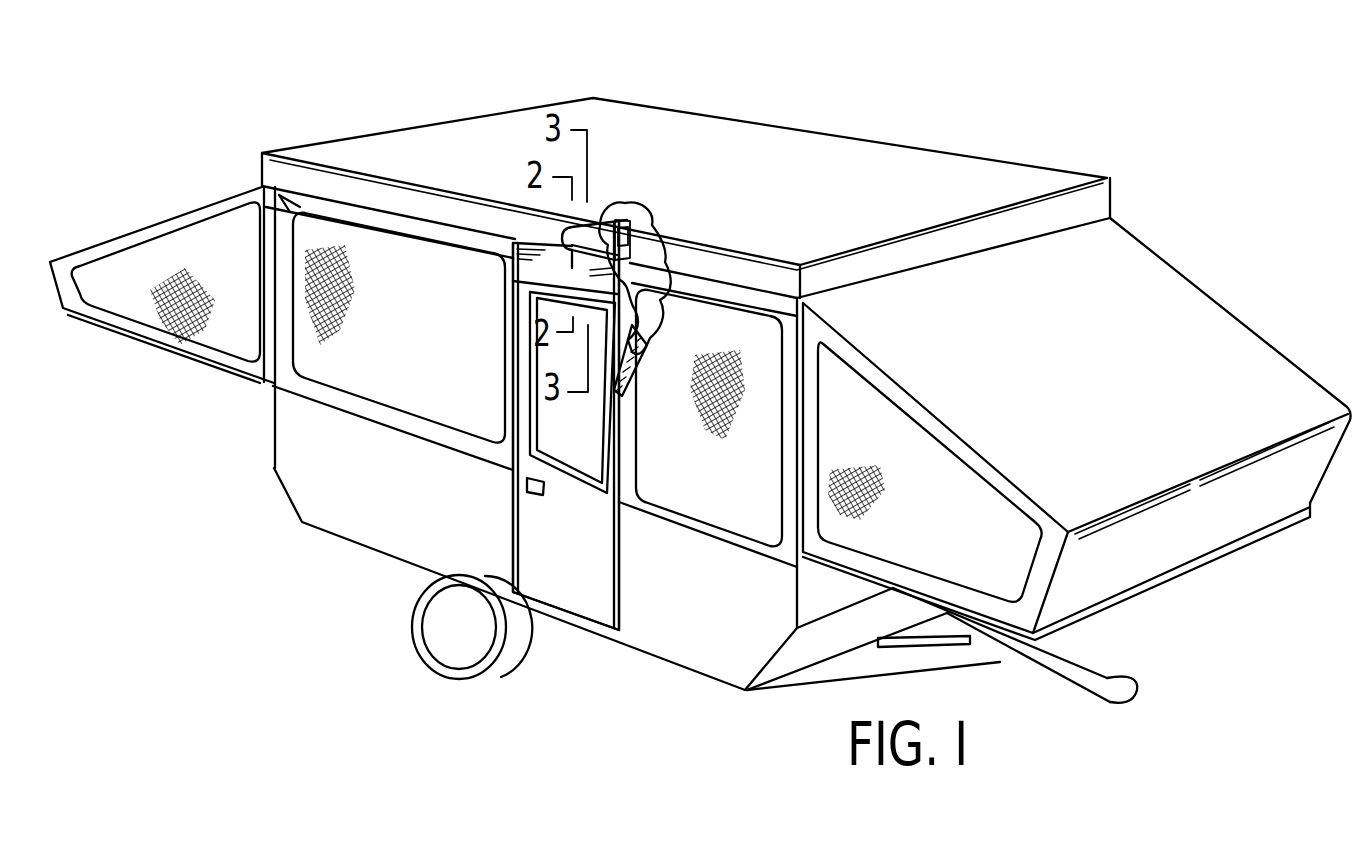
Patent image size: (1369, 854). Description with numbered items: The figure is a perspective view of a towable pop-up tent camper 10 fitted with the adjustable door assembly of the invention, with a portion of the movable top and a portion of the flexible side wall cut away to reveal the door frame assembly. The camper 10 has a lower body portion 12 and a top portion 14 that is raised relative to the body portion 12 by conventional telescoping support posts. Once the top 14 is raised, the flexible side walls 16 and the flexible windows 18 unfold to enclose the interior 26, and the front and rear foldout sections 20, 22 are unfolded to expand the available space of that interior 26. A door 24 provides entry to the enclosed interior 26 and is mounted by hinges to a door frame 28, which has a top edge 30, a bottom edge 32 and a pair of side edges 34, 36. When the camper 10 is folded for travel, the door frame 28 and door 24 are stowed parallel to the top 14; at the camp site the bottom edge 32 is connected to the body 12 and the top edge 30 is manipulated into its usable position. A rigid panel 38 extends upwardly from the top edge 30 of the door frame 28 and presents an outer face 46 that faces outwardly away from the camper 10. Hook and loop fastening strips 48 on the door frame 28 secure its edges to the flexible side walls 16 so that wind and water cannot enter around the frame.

The pop-up tent camper 10 is at (700, 388).
The body portion 12 is at (660, 665).
The top portion 14 is at (1013, 162).
The flexible side walls 16 is at (267, 383).
The flexible windows 18 is at (360, 372).
The front foldout section 20 is at (1229, 313).
The rear foldout section 22 is at (182, 214).
The door 24 is at (553, 378).
The interior 26 is at (651, 260).
The door frame 28 is at (508, 538).
The top edge 30 is at (538, 281).
The bottom edge 32 is at (550, 612).
The side edge 34 is at (517, 427).
The side edge 36 is at (620, 430).
The rigid panel 38 is at (558, 276).
The outer face 46 is at (552, 266).
The hook and loop fastening strips 48 is at (647, 350).